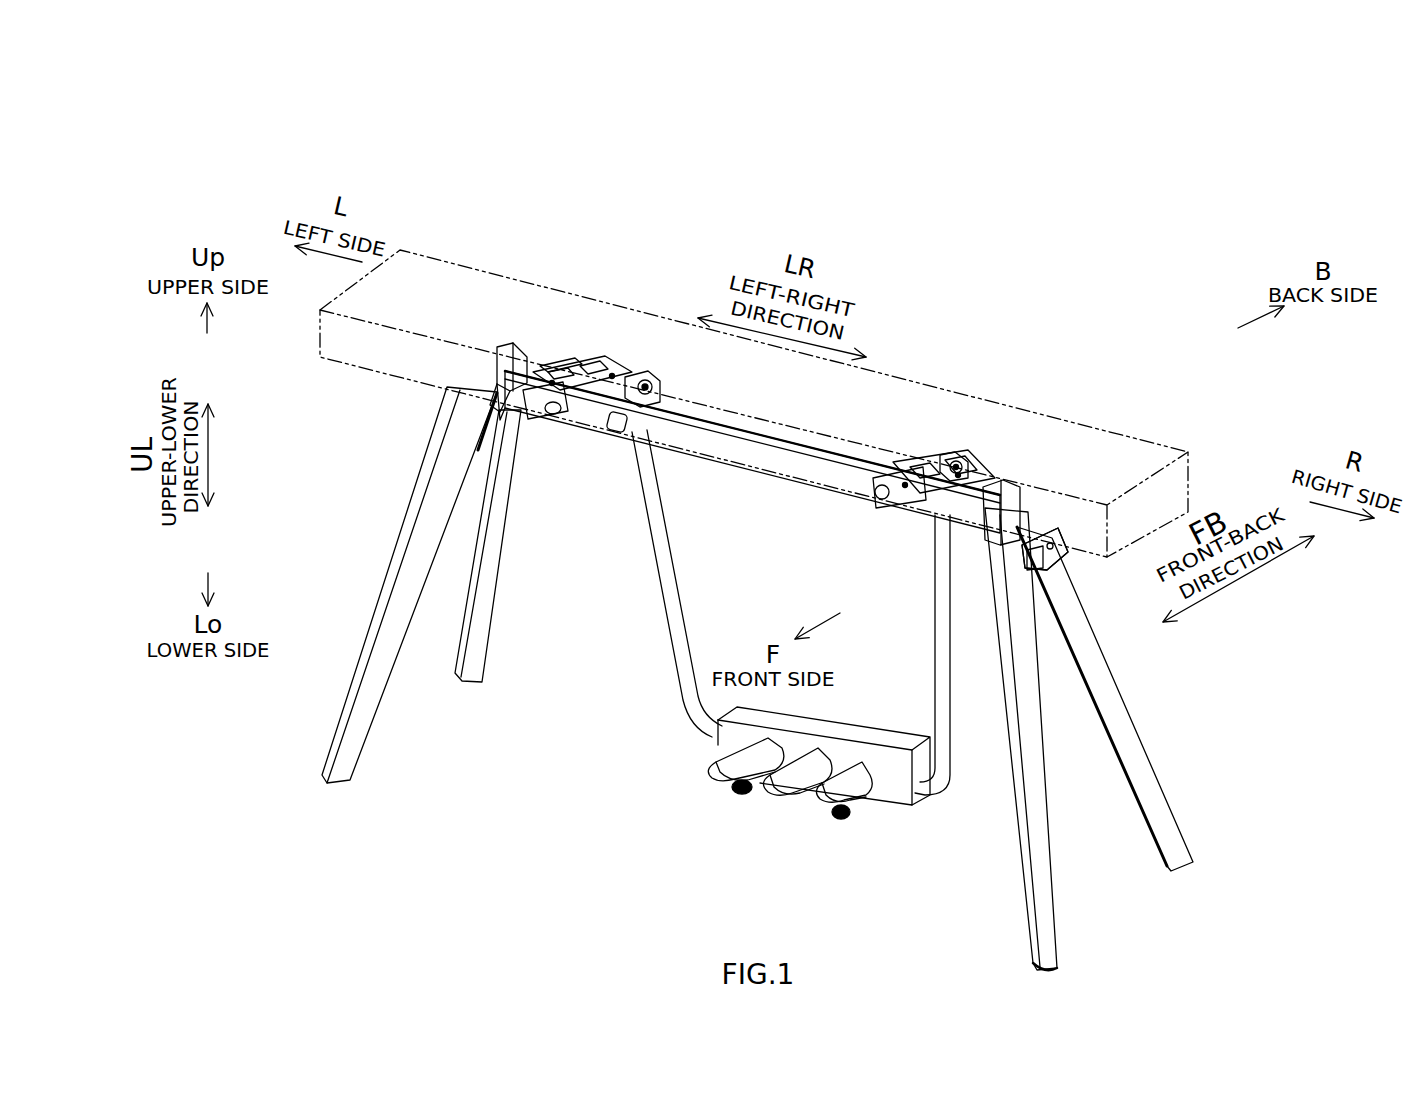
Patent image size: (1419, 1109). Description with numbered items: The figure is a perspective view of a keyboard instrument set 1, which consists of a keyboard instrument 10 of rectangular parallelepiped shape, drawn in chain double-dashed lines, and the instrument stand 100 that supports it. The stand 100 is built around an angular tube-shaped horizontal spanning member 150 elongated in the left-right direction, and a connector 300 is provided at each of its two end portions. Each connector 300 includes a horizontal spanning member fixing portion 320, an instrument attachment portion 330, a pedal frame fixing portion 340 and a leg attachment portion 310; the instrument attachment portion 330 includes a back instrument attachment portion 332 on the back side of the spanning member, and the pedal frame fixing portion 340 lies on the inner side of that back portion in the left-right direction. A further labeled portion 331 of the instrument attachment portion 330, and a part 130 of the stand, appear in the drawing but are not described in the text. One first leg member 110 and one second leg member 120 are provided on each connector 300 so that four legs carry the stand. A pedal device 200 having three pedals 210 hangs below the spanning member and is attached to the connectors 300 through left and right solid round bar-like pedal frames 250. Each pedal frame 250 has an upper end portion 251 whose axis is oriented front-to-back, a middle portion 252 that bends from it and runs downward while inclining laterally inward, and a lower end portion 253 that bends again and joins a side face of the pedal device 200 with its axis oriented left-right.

The keyboard instrument set 1 is at (1239, 287).
The keyboard instrument 10 is at (980, 393).
The instrument stand 100 is at (1203, 630).
The first leg member 110 is at (373, 673).
The second leg member 120 is at (487, 600).
The instrument attachment portion bracket 130 is at (1033, 557).
The horizontal spanning member 150 is at (782, 463).
The pedal device 200 is at (772, 808).
The pedal 210 is at (718, 770).
The pedal frame 250 is at (781, 651).
The upper end portion 251 is at (661, 376).
The middle portion 252 is at (664, 581).
The lower end portion 253 is at (692, 738).
The connector 300 is at (1100, 357).
The leg attachment portion 310 is at (1167, 417).
The horizontal spanning member fixing portion 320 is at (588, 412).
The instrument attachment portion 330 is at (805, 452).
The instrument attachment portion 331 is at (1375, 810).
The back instrument attachment portion 332 is at (566, 356).
The pedal frame fixing portion 340 is at (946, 449).